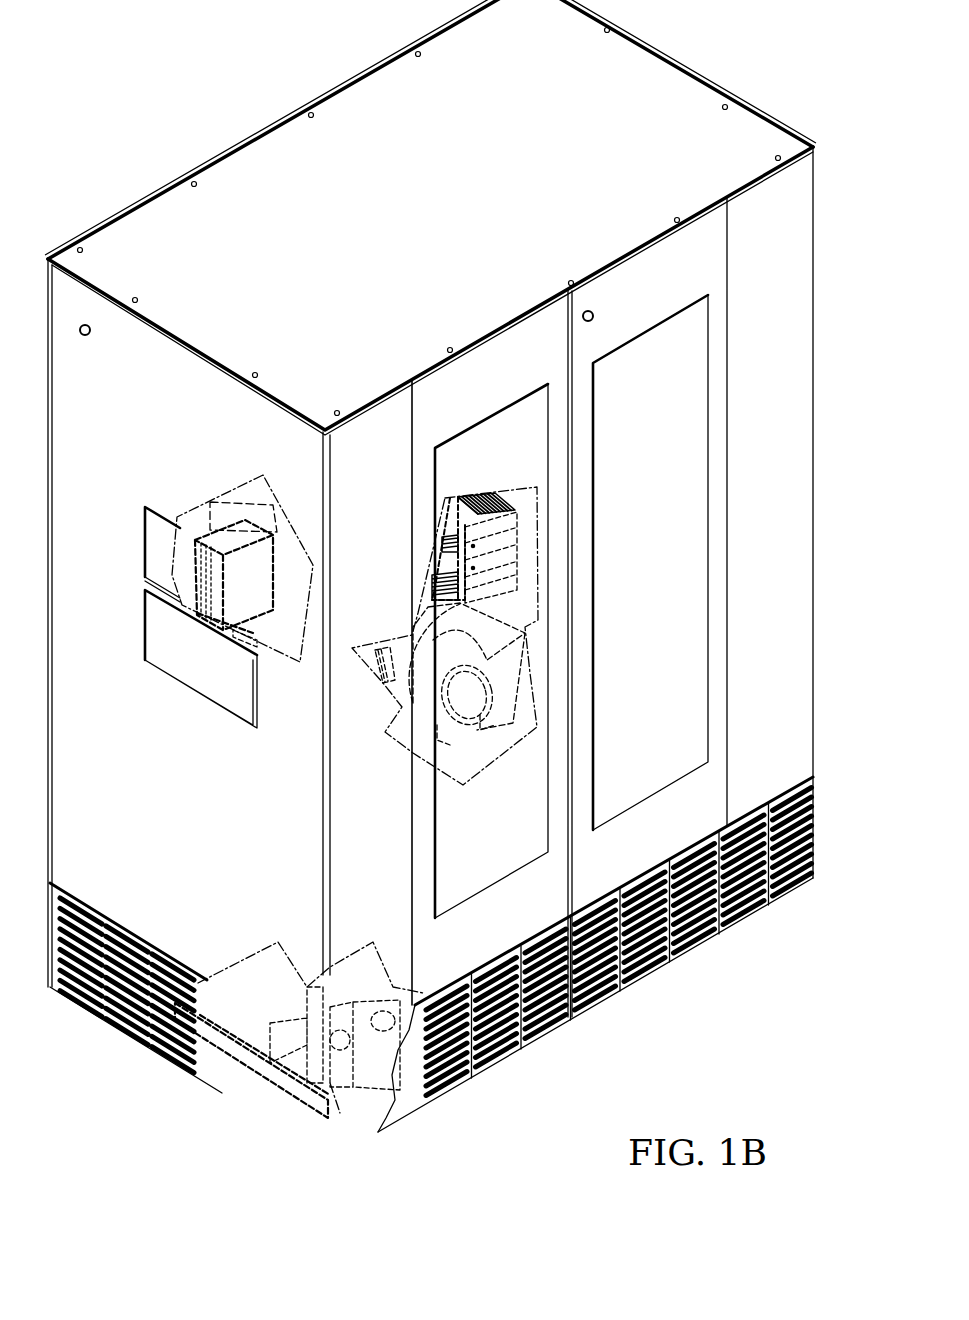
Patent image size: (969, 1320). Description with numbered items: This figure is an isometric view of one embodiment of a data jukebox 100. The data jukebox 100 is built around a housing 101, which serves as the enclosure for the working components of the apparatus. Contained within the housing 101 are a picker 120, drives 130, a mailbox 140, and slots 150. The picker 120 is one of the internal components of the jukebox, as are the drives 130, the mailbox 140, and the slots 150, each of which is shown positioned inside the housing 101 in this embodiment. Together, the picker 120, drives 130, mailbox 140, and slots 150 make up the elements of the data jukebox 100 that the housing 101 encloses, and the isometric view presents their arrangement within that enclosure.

The data jukebox 100 is at (173, 60).
The housing 101 is at (790, 197).
The picker 120 is at (473, 688).
The drives 130 is at (507, 562).
The mailbox 140 is at (200, 537).
The slots 150 is at (492, 495).